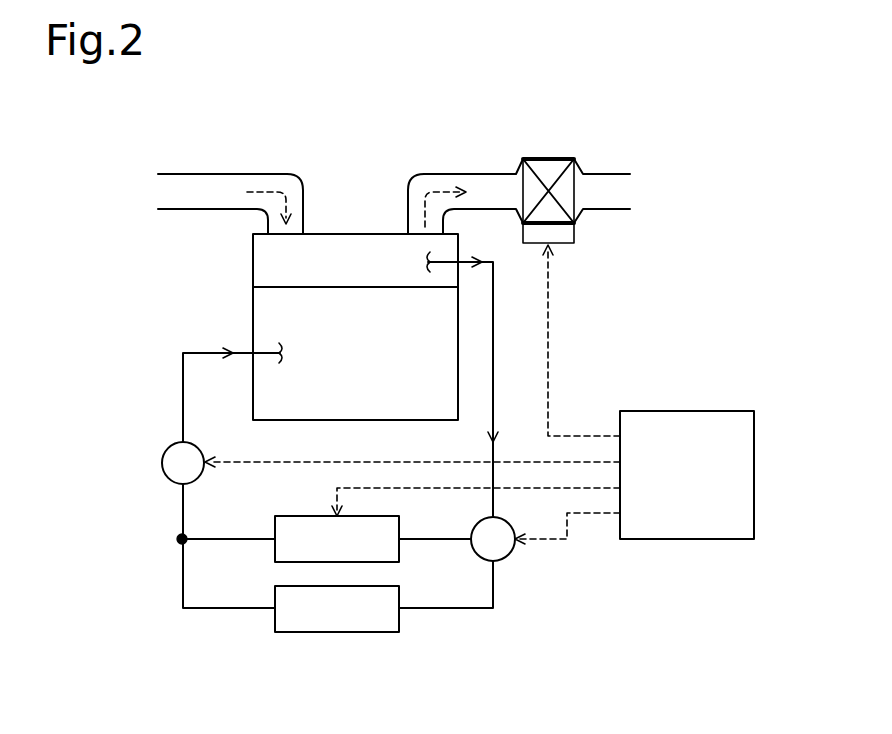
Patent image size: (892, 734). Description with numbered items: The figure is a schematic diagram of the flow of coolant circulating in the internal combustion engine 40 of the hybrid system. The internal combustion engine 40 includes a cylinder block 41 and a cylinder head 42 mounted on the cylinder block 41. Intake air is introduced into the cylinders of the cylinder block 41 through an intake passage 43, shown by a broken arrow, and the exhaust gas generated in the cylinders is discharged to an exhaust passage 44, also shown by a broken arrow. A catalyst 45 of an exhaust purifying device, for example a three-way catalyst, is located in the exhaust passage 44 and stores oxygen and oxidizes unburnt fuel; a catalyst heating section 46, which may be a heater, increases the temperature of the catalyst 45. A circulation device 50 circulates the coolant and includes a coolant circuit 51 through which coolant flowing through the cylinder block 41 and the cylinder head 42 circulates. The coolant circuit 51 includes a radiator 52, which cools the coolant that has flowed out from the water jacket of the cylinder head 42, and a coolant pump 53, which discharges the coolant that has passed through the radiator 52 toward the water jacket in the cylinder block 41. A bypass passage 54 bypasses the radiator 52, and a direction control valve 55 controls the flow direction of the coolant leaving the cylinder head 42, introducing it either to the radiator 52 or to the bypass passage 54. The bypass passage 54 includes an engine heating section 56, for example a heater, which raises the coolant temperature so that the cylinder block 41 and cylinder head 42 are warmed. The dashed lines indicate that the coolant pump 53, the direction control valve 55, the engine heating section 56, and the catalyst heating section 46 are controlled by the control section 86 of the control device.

The internal combustion engine 40 is at (461, 132).
The cylinder block 41 is at (253, 404).
The cylinder head 42 is at (253, 260).
The intake passage 43 is at (209, 173).
The exhaust passage 44 is at (478, 174).
The catalyst 45 is at (548, 165).
The catalyst heating section 46 is at (574, 235).
The circulation device 50 is at (143, 514).
The coolant circuit 51 is at (183, 394).
The radiator 52 is at (275, 622).
The coolant pump 53 is at (163, 463).
The bypass passage 54 is at (230, 541).
The direction control valve 55 is at (511, 556).
The engine heating section 56 is at (399, 550).
The control section 86 is at (754, 450).